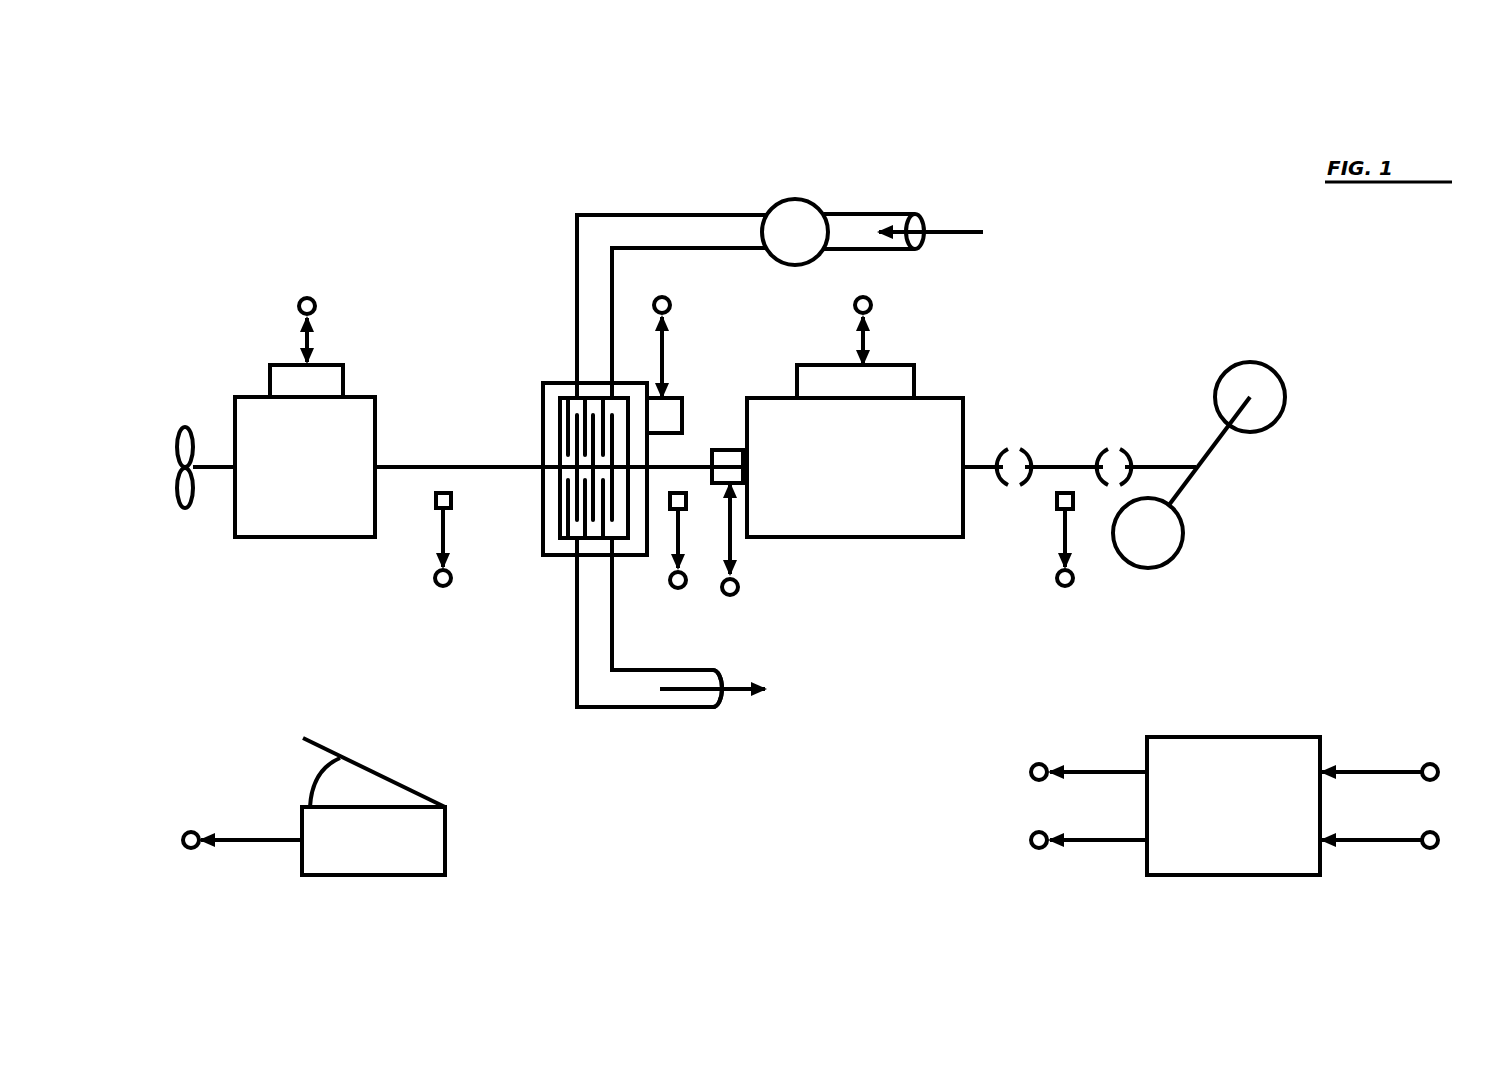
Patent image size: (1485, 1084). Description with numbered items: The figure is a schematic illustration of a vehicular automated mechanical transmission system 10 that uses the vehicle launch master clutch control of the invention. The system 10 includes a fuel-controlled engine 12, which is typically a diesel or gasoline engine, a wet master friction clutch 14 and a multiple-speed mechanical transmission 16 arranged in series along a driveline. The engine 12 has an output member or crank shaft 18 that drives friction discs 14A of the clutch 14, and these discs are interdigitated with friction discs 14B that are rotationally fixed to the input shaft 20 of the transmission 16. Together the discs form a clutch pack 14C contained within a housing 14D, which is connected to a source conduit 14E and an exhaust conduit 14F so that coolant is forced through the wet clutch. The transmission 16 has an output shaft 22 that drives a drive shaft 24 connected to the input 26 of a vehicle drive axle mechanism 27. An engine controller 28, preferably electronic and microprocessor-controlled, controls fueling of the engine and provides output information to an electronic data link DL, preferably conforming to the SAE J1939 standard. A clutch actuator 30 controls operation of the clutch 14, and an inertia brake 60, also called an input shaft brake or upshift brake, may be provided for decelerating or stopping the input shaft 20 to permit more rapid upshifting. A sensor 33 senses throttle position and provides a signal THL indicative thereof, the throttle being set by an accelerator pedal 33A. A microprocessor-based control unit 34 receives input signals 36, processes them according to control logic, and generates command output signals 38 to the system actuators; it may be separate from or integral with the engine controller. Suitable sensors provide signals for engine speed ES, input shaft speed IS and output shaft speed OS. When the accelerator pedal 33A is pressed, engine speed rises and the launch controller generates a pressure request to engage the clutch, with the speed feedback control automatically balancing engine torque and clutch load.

The vehicular automated mechanical transmission system 10 is at (1036, 130).
The fuel-controlled engine 12 is at (307, 500).
The wet master friction clutch 14 is at (541, 333).
The friction discs 14A is at (558, 455).
The friction discs 14B is at (566, 530).
The clutch pack 14C is at (562, 550).
The housing 14D is at (562, 395).
The source conduit 14E is at (598, 240).
The exhaust conduit 14F is at (602, 628).
The multiple-speed mechanical transmission 16 is at (878, 502).
The crank shaft 18 is at (427, 465).
The input shaft 20 is at (693, 465).
The output shaft 22 is at (897, 380).
The drive shaft 24 is at (1050, 467).
The input 26 is at (1185, 467).
The vehicle drive axle mechanism 27 is at (1222, 499).
The engine controller 28 is at (288, 382).
The clutch actuator 30 is at (662, 417).
The sensor 33 is at (353, 823).
The accelerator pedal 33A is at (382, 772).
The microprocessor-based control unit 34 is at (1225, 846).
The input signals 36 is at (1388, 876).
The command output signals 38 is at (1082, 876).
The inertia brake 60 is at (733, 458).
The electronic data link DL is at (325, 350).
The engine speed signal ES is at (435, 535).
The input shaft speed signal IS is at (697, 557).
The output shaft speed signal OS is at (1048, 517).
The throttle position signal THL is at (235, 842).